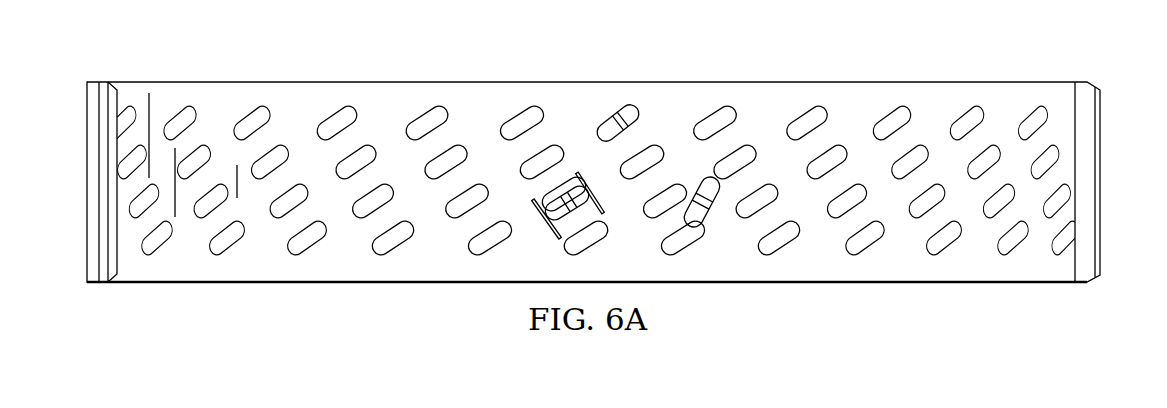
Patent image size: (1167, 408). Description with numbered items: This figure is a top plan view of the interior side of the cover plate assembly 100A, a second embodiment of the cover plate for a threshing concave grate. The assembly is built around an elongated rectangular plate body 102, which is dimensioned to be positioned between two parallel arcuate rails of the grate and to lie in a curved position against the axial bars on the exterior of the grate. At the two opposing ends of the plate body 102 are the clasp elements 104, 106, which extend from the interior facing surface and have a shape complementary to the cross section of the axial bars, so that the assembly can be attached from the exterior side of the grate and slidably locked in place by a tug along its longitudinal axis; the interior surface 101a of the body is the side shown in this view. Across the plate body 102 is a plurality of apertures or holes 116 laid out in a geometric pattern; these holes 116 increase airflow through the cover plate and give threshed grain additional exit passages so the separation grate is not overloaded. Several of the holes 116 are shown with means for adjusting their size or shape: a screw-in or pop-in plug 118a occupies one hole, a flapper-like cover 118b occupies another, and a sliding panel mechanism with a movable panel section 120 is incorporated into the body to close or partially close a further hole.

The cover plate assembly 100A is at (668, 55).
The first surface of plate 101a is at (896, 263).
The elongated plate body 102 is at (353, 283).
The clasp element 104 is at (95, 182).
The clasp element 106 is at (1088, 178).
The apertures or holes 116 is at (527, 117).
The screw-in or pop-in plug 118a is at (603, 122).
The flapper-like cover 118b is at (710, 222).
The movable panel section 120 is at (557, 233).